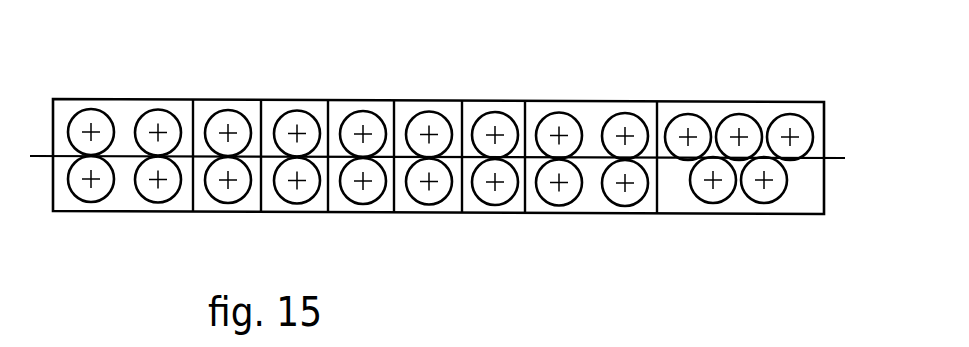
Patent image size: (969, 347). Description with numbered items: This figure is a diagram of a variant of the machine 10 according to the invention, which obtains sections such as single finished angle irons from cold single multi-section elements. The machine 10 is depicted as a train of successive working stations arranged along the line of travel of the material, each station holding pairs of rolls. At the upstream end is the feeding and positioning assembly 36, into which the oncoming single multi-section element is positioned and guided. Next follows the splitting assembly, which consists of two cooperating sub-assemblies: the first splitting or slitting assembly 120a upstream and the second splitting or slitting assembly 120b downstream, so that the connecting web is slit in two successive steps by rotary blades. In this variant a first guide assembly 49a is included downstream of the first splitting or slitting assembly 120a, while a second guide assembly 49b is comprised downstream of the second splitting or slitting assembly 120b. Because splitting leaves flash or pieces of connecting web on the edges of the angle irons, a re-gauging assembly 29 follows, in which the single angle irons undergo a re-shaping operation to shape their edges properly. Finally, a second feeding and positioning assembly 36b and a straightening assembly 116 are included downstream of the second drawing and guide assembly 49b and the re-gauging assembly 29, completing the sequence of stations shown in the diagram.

The machine 10 is at (525, 222).
The feeding and positioning assembly 36 is at (120, 108).
The second feeding and positioning assembly 36b is at (600, 110).
The first splitting or slitting assembly 120a is at (215, 107).
The second splitting or slitting assembly 120b is at (383, 202).
The first guide assembly 49a is at (315, 107).
The second guide assembly 49b is at (452, 108).
The re-gauging assembly 29 is at (517, 113).
The straightening assembly 116 is at (765, 110).